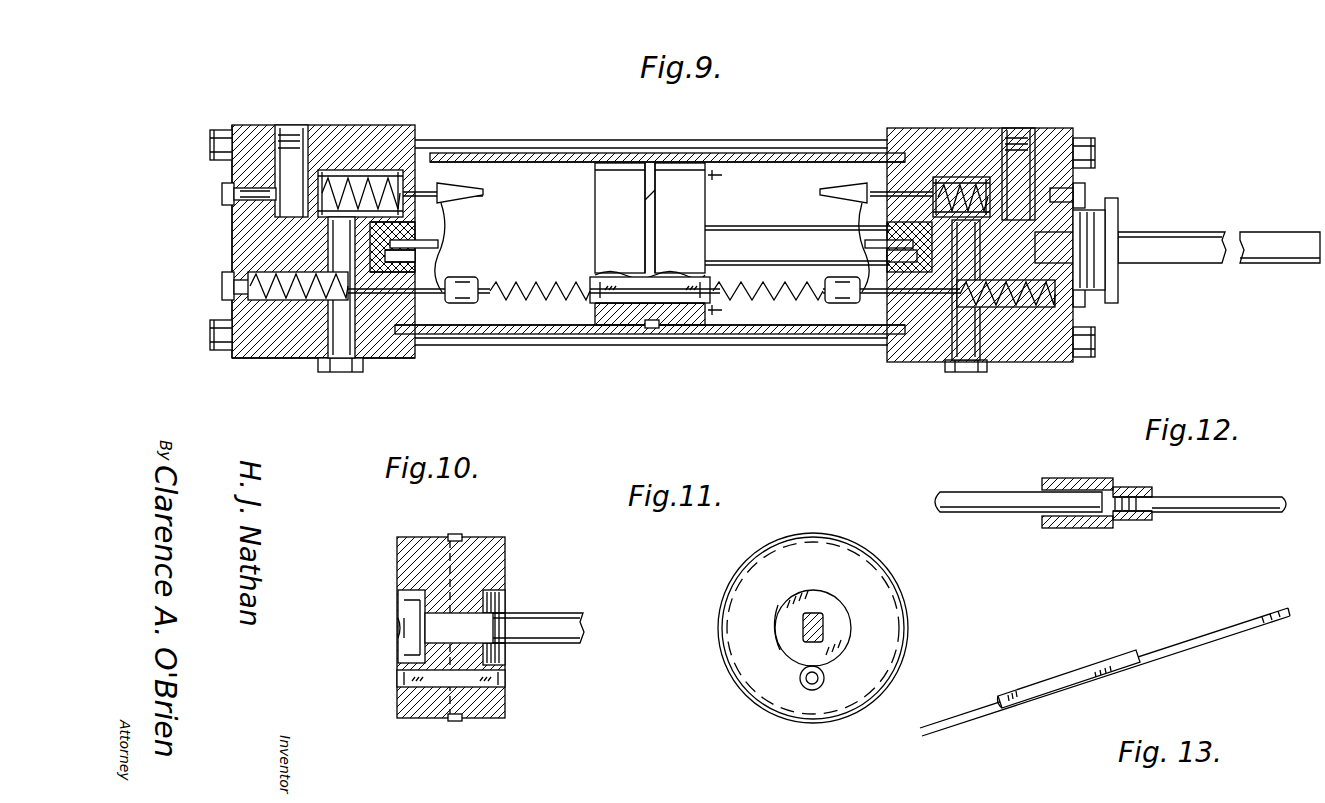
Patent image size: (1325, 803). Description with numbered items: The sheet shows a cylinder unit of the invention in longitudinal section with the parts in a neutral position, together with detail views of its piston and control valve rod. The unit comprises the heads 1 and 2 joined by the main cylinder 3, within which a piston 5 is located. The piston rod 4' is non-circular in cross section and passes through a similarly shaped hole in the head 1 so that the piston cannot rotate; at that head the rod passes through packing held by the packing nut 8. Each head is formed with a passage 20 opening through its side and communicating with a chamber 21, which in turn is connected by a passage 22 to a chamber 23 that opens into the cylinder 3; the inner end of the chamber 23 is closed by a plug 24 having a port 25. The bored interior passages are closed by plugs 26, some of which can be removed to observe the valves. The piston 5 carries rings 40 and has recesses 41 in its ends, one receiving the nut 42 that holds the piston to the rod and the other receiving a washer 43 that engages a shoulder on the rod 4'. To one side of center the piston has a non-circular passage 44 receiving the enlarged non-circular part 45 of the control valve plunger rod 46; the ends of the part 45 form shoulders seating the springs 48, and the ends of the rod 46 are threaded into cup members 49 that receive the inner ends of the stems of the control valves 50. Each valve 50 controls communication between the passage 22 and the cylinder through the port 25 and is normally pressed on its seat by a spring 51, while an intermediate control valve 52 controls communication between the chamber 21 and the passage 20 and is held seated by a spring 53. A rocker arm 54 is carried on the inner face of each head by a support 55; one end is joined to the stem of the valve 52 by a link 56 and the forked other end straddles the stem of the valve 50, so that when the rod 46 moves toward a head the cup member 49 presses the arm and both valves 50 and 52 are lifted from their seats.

In FIG. 9, the head 1 is at (1058, 130).
In FIG. 9, the head 2 is at (233, 358).
In FIG. 9, the main cylinder 3 is at (545, 153).
In FIG. 9, the piston rod 4' is at (1012, 242).
In FIG. 10, the piston rod 4' is at (518, 607).
In FIG. 11, the piston rod 4' is at (786, 641).
In FIG. 9, the piston 5 is at (622, 170).
In FIG. 10, the piston 5 is at (412, 540).
In FIG. 11, the piston 5 is at (742, 578).
In FIG. 9, the packing nut 8 is at (1120, 208).
In FIG. 9, the passage 20 is at (291, 140).
In FIG. 9, the chamber 21 is at (346, 170).
In FIG. 9, the passage 22 is at (318, 358).
In FIG. 9, the chamber 23 is at (298, 358).
In FIG. 9, the plug 24 is at (430, 270).
In FIG. 9, the port 25 is at (432, 252).
In FIG. 9, the plugs 26 is at (222, 192).
In FIG. 9, the rings 40 is at (650, 330).
In FIG. 10, the rings 40 is at (458, 534).
In FIG. 11, the rings 40 is at (812, 533).
In FIG. 10, the recesses 41 is at (404, 648).
In FIG. 10, the nut 42 is at (412, 618).
In FIG. 10, the washer 43 is at (506, 596).
In FIG. 11, the washer 43 is at (792, 655).
In FIG. 9, the non-circular passage 44 is at (688, 305).
In FIG. 10, the non-circular passage 44 is at (400, 678).
In FIG. 9, the non-circular part 45 is at (600, 280).
In FIG. 13, the non-circular part 45 is at (1072, 674).
In FIG. 9, the control valve plunger rod 46 is at (512, 284).
In FIG. 11, the control valve plunger rod 46 is at (803, 688).
In FIG. 12, the control valve plunger rod 46 is at (1234, 496).
In FIG. 13, the control valve plunger rod 46 is at (955, 718).
In FIG. 9, the springs 48 is at (512, 302).
In FIG. 9, the cup members 49 is at (460, 305).
In FIG. 12, the cup members 49 is at (1064, 478).
In FIG. 9, the control valve 50 is at (346, 272).
In FIG. 12, the control valve 50 is at (958, 492).
In FIG. 9, the spring 51 is at (252, 275).
In FIG. 9, the intermediate control valve 52 is at (340, 175).
In FIG. 9, the spring 53 is at (380, 170).
In FIG. 9, the rocker arm 54 is at (446, 220).
In FIG. 9, the support 55 is at (440, 242).
In FIG. 9, the link 56 is at (455, 186).